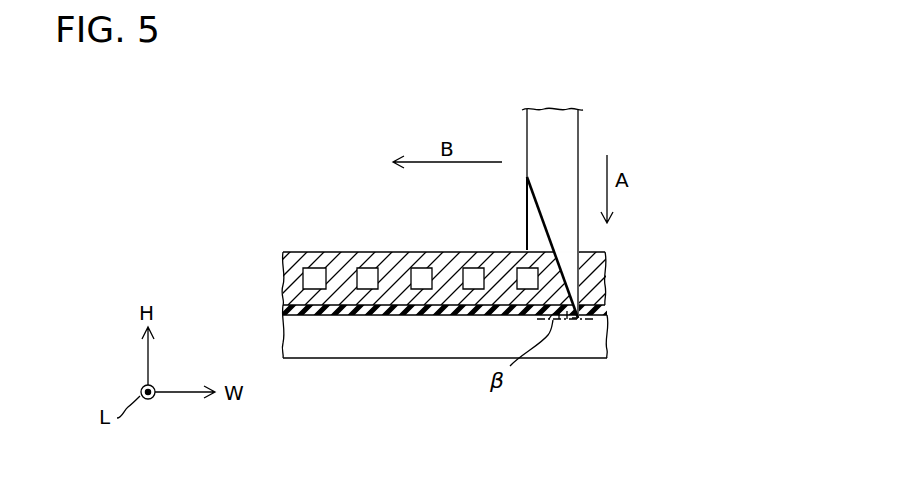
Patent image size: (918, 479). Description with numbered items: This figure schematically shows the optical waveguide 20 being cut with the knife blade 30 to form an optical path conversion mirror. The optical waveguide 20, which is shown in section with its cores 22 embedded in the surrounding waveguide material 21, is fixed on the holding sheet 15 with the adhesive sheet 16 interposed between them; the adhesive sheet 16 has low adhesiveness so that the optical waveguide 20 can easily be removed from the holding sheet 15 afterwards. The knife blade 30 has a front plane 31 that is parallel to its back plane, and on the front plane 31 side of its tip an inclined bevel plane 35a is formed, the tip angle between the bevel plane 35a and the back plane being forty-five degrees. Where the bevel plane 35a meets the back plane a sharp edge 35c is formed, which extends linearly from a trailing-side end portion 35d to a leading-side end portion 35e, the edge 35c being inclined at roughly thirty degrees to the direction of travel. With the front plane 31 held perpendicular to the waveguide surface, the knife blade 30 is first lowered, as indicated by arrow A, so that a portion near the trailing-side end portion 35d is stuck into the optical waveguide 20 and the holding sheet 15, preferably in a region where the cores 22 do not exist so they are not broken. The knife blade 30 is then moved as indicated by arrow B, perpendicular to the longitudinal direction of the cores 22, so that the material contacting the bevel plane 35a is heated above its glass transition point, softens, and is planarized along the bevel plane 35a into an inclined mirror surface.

The holding sheet 15 is at (607, 346).
The adhesive sheet 16 is at (607, 316).
The optical waveguide 20 is at (273, 252).
The insulating layer 21 is at (341, 266).
The cores 22 is at (418, 272).
The knife blade 30 is at (585, 120).
The front plane 31 is at (570, 165).
The bevel plane 35a is at (556, 251).
The edge 35c is at (527, 250).
The trailing-side end portion 35d is at (578, 320).
The leading-side end portion 35e is at (527, 243).